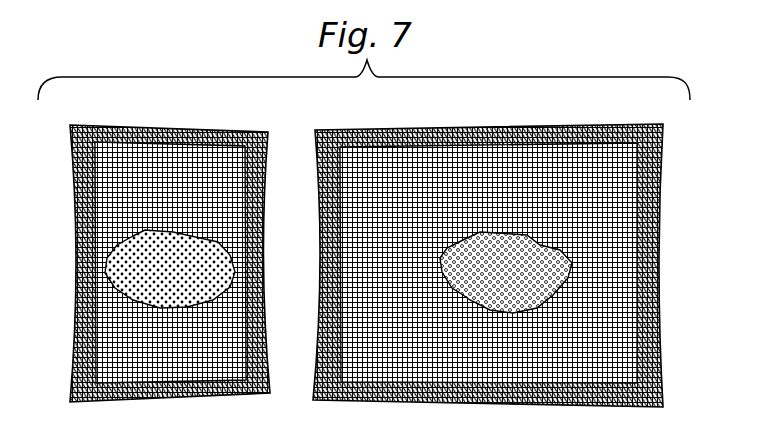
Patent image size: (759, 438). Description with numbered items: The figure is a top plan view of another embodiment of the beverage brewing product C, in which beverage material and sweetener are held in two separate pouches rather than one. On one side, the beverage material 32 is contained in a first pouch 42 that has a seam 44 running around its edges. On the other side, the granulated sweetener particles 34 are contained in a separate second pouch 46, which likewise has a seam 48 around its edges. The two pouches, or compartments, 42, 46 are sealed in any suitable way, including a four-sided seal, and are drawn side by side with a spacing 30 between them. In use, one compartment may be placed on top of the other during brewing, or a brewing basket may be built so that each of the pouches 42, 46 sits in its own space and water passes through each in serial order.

The beverage brewing product C is at (452, 115).
The spacing between pouches 30 is at (272, 125).
The beverage material 32 is at (113, 268).
The granulated sweetener particles 34 is at (523, 262).
The pouch 42 is at (144, 263).
The seam 44 is at (75, 355).
The pouch 46 is at (523, 265).
The seam 48 is at (654, 240).